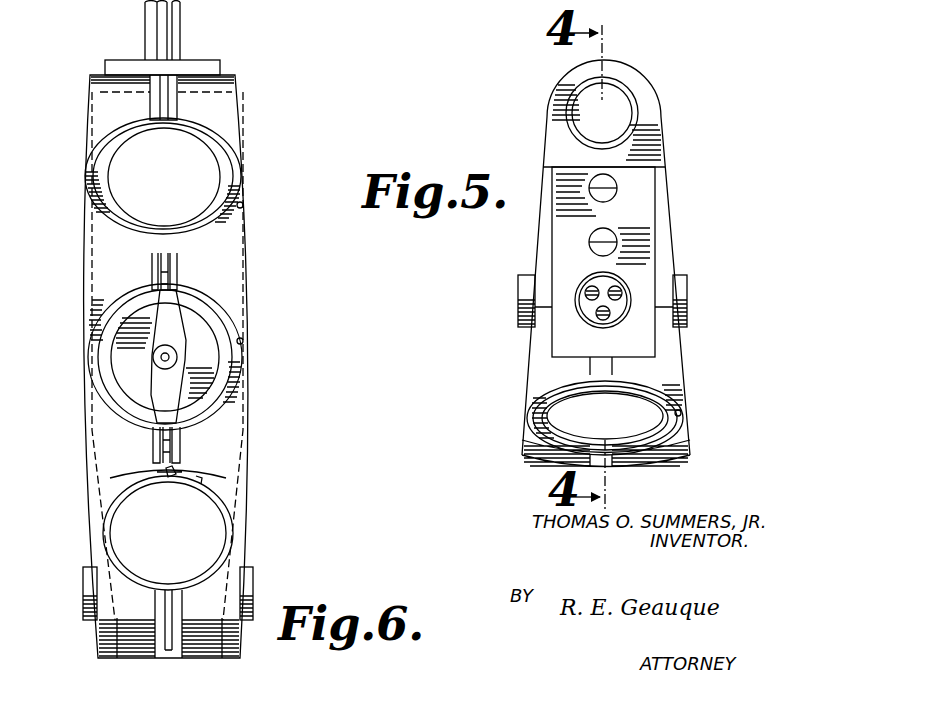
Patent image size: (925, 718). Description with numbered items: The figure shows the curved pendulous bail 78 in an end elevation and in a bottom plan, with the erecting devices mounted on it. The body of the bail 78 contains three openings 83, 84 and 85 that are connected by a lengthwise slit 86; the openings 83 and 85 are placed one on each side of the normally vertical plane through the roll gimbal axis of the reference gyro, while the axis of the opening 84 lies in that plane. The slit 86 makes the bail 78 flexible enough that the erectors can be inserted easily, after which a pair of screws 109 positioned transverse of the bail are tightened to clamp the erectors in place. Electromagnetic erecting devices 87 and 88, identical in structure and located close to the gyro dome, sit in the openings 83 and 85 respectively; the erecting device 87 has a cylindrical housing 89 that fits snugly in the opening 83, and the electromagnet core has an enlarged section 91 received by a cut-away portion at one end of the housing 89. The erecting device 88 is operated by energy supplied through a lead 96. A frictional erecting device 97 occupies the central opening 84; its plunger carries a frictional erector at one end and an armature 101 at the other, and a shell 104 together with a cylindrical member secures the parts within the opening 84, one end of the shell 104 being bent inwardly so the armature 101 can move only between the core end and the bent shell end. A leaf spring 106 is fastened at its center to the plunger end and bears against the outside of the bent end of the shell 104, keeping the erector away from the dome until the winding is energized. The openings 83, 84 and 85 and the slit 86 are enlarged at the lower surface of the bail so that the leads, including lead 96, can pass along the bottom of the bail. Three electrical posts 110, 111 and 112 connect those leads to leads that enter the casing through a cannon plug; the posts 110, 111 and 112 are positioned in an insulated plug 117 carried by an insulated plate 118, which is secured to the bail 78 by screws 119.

In FIG. 6, the pendulous bail 78 is at (82, 326).
In FIG. 5, the pendulous bail 78 is at (685, 350).
In FIG. 6, the opening 83 is at (242, 205).
In FIG. 5, the opening 83 is at (682, 414).
In FIG. 6, the opening 84 is at (243, 341).
In FIG. 6, the opening 85 is at (198, 480).
In FIG. 6, the lengthwise slit 86 is at (165, 110).
In FIG. 5, the lengthwise slit 86 is at (612, 368).
In FIG. 6, the electromagnetic erecting device 87 is at (193, 154).
In FIG. 6, the electromagnetic erecting device 88 is at (133, 527).
In FIG. 5, the electromagnetic erecting device 88 is at (565, 420).
In FIG. 6, the cylindrical housing 89 is at (120, 232).
In FIG. 5, the cylindrical housing 89 is at (565, 388).
In FIG. 6, the enlarged section 91 is at (203, 167).
In FIG. 5, the enlarged section 91 is at (645, 410).
In FIG. 6, the lead 96 is at (172, 472).
In FIG. 6, the frictional erecting device 97 is at (115, 378).
In FIG. 5, the frictional erecting device 97 is at (535, 470).
In FIG. 6, the armature 101 is at (205, 336).
In FIG. 6, the shell 104 is at (197, 303).
In FIG. 6, the leaf spring 106 is at (162, 398).
In FIG. 6, the screws 109 is at (160, 272).
In FIG. 6, the electrical post 110 is at (166, 34).
In FIG. 5, the electrical post 110 is at (603, 314).
In FIG. 6, the electrical post 111 is at (176, 16).
In FIG. 5, the electrical post 111 is at (616, 290).
In FIG. 6, the electrical post 112 is at (150, 30).
In FIG. 5, the electrical post 112 is at (590, 291).
In FIG. 5, the insulated plug 117 is at (618, 308).
In FIG. 6, the insulated plate 118 is at (205, 63).
In FIG. 5, the insulated plate 118 is at (553, 240).
In FIG. 5, the screws 119 is at (610, 233).